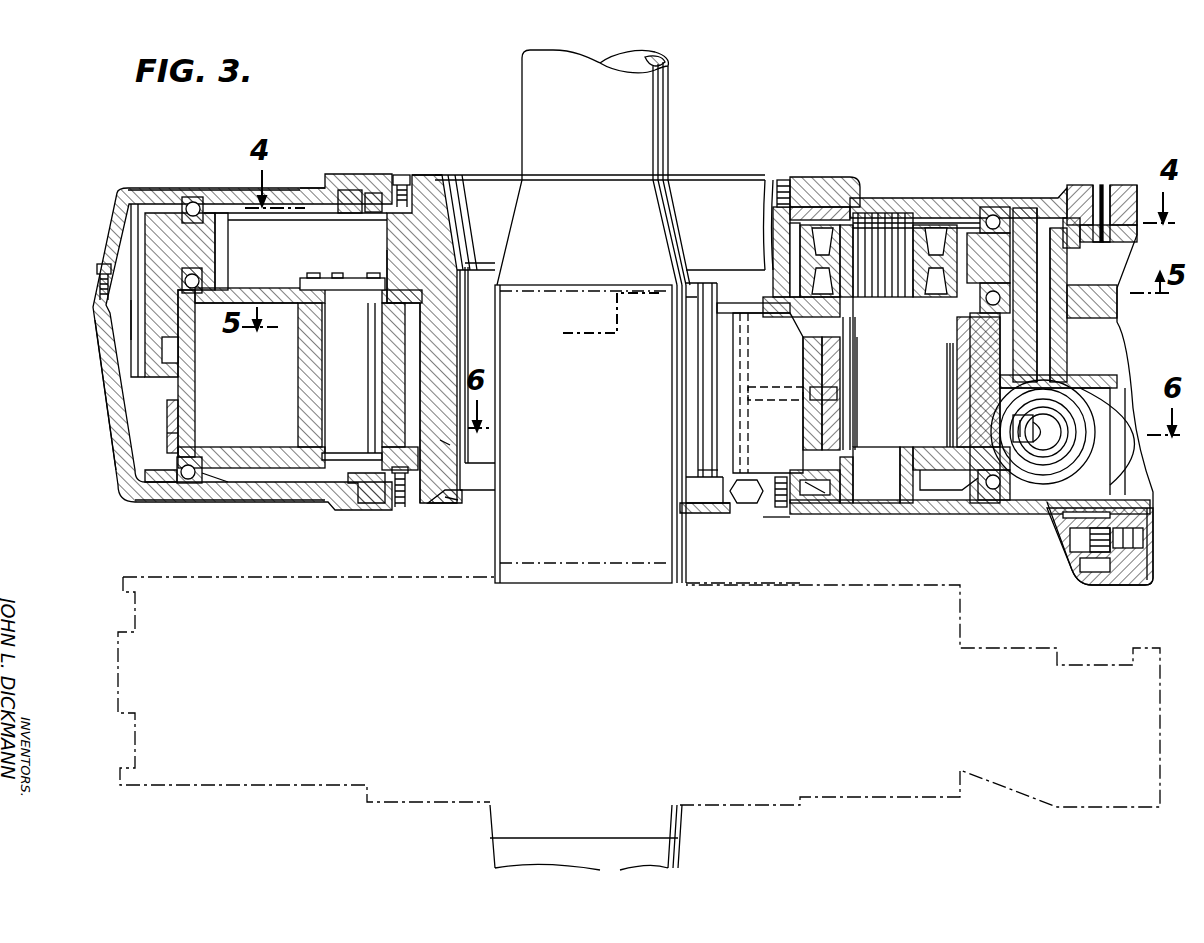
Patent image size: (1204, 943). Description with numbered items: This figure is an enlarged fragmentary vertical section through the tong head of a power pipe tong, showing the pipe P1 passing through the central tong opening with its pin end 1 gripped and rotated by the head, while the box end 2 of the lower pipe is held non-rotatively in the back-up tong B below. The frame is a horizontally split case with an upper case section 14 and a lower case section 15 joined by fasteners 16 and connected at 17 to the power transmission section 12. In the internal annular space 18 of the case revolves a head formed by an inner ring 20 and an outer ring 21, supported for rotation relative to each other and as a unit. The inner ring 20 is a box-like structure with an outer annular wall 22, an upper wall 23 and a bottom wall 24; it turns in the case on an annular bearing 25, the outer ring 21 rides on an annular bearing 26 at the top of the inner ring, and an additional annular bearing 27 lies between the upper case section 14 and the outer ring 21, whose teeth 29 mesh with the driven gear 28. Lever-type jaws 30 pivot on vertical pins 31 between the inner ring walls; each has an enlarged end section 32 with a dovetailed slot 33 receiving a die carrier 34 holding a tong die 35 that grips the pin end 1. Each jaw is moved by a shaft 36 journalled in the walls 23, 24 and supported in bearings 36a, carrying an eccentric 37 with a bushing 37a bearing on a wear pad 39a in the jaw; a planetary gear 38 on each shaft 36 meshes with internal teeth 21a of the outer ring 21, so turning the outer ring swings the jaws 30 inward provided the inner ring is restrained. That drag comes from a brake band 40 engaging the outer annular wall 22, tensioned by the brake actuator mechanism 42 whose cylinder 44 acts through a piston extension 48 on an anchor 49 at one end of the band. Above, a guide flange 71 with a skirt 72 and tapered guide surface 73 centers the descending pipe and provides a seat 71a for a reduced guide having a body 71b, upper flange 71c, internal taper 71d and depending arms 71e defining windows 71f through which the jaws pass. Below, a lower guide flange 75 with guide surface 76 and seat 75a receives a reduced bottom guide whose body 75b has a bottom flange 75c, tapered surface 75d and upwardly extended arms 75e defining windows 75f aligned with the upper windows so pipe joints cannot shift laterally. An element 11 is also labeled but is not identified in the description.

The pin end 1 is at (495, 547).
The box end 2 is at (688, 572).
The cover 11 is at (302, 187).
The power transmission section 12 is at (1135, 590).
The upper case section 14 is at (124, 190).
The lower case section 15 is at (167, 438).
The fasteners 16 is at (97, 285).
The connection 17 is at (1128, 185).
The internal annular space 18 is at (135, 400).
The inner ring assembly 20 is at (260, 478).
The outer ring assembly 21 is at (130, 357).
The internal teeth 21a is at (222, 235).
The outer annular wall 22 is at (193, 375).
The upper wall 23 is at (212, 305).
The bottom wall 24 is at (237, 450).
The annular bearing 25 is at (184, 486).
The annular bearing 26 is at (197, 283).
The annular bearing 27 is at (193, 198).
The gear 28 is at (1100, 288).
The teeth 29 is at (137, 325).
The jaws 30 is at (298, 383).
The vertical pins 31 is at (345, 297).
The enlarged end section 32 is at (813, 430).
The dovetailed slot 33 is at (845, 412).
The die carrier 34 is at (774, 411).
The tong die 35 is at (737, 363).
The shaft 36 is at (878, 220).
The bearings 36a is at (960, 372).
The eccentric 37 is at (888, 330).
The bushing 37a is at (963, 405).
The planetary gears 38 is at (848, 225).
The wear pad 39a is at (841, 357).
The brake band 40 is at (168, 433).
The brake actuator mechanism 42 is at (1112, 448).
The cylinder 44 is at (1063, 412).
The piston extension 48 is at (1043, 440).
The anchor 49 is at (1028, 440).
The flange 71 is at (808, 177).
The seat 71a is at (782, 180).
The body 71b is at (760, 218).
The upper flange 71c is at (422, 175).
The internal taper 71d is at (452, 200).
The depending arms 71e is at (443, 323).
The windows 71f is at (710, 293).
The skirt 72 is at (398, 253).
The tapered guide surface 73 is at (398, 228).
The guide flange 75 is at (355, 506).
The seat 75a is at (405, 508).
The body 75b is at (740, 503).
The bottom flange 75c is at (780, 508).
The tapered surface 75d is at (445, 497).
The upwardly extended arms 75e is at (443, 453).
The windows 75f is at (705, 474).
The guide surface 76 is at (440, 500).
The pipe P1 is at (672, 84).
The back-up tong B is at (212, 787).